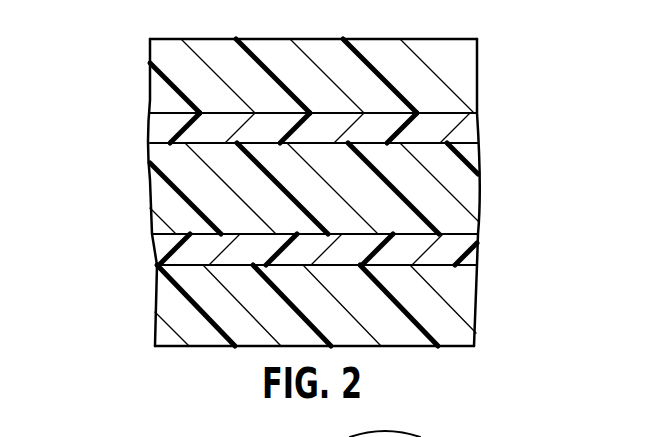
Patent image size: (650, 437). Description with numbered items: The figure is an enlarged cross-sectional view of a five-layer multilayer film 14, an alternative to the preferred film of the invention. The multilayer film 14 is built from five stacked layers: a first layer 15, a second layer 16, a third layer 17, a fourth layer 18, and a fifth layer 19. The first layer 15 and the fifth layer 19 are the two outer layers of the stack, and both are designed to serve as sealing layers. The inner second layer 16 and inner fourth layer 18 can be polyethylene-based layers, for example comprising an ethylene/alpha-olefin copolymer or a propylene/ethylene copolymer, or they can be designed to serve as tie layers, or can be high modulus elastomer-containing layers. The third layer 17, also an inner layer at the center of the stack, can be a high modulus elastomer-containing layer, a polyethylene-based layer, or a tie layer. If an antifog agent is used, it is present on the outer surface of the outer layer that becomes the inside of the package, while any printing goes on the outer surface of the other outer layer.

The multilayer film 14 is at (311, 173).
The first layer 15 is at (386, 57).
The second layer 16 is at (457, 127).
The third layer 17 is at (458, 190).
The fourth layer 18 is at (462, 250).
The fifth layer 19 is at (180, 305).